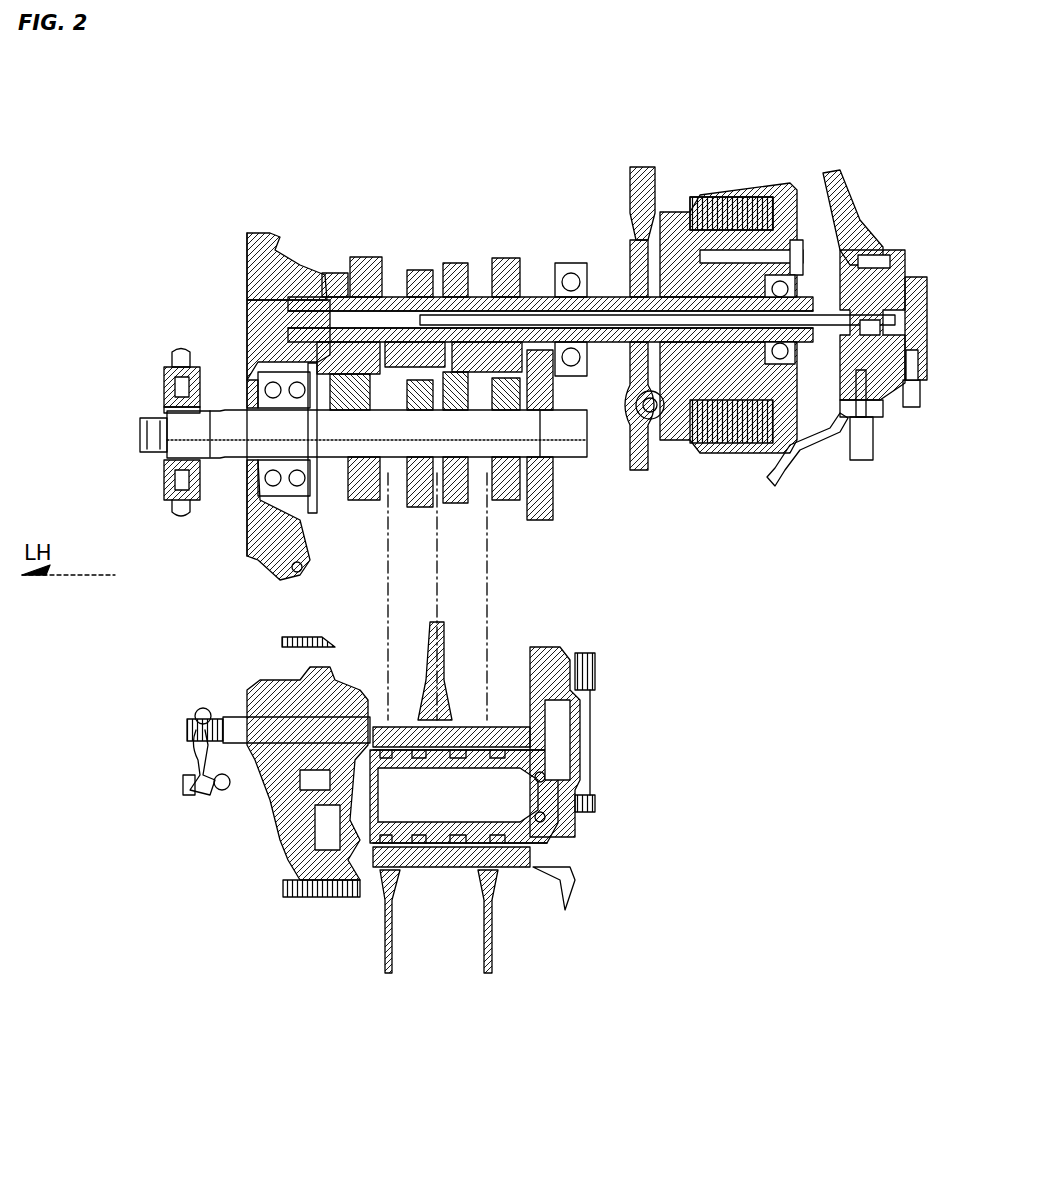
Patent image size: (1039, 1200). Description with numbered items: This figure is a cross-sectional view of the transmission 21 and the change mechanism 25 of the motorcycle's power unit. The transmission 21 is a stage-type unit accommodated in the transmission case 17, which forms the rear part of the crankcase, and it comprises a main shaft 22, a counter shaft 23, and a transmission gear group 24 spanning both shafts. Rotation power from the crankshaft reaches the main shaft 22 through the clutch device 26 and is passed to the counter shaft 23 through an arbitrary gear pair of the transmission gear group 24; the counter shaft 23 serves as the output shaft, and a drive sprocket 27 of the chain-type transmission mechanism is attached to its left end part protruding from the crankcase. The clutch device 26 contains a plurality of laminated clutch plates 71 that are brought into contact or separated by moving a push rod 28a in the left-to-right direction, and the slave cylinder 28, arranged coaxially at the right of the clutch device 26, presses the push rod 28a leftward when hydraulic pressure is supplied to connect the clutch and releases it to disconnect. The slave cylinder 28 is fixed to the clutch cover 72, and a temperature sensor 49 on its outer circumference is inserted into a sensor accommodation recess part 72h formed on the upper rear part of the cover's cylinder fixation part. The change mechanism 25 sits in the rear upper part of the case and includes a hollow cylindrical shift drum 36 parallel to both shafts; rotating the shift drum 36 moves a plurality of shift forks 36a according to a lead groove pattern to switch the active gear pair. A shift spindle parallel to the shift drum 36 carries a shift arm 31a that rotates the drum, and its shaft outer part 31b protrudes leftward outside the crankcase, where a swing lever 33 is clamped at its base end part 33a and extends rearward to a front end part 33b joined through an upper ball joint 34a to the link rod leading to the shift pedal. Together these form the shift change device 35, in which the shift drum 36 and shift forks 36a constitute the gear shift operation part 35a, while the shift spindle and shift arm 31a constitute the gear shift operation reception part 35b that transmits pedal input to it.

The transmission 21 is at (326, 138).
The transmission case 17 is at (246, 252).
The main shaft 22 is at (478, 292).
The counter shaft 23 is at (374, 435).
The transmission gear group 24 is at (436, 245).
The change mechanism 25 is at (156, 680).
The clutch device 26 is at (738, 176).
The drive sprocket 27 is at (180, 512).
The slave cylinder 28 is at (922, 370).
The push rod 28a is at (815, 318).
The shift arm 31a is at (305, 808).
The shaft outer part 31b is at (236, 725).
The swing lever 33 is at (183, 760).
The base end part 33a is at (192, 715).
The front end part 33b is at (186, 790).
The upper ball joint 34a is at (218, 790).
The shift change device 35 is at (115, 1048).
The gear shift operation part 35a is at (301, 936).
The gear shift operation reception part 35b is at (236, 858).
The shift drum 36 is at (487, 770).
The shift fork 36a is at (437, 665).
The temperature sensor 49 is at (838, 455).
The clutch plate 71 is at (724, 186).
The clutch cover 72 is at (855, 205).
The sensor accommodation recess part 72h is at (862, 425).